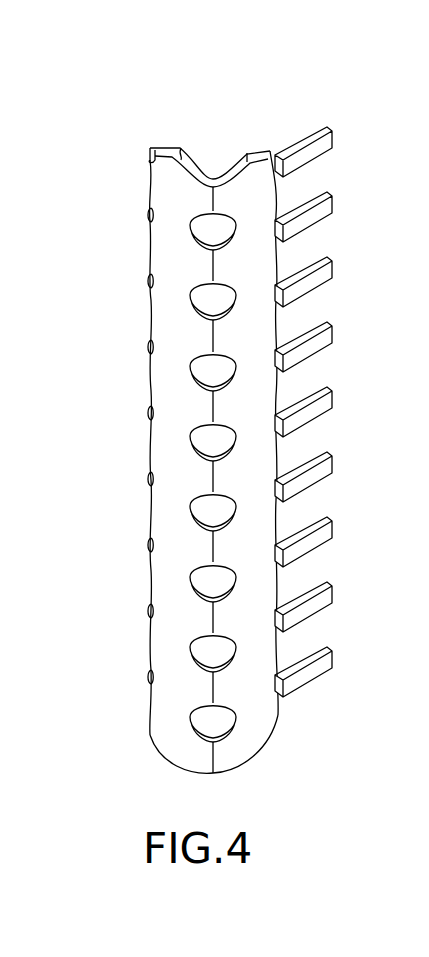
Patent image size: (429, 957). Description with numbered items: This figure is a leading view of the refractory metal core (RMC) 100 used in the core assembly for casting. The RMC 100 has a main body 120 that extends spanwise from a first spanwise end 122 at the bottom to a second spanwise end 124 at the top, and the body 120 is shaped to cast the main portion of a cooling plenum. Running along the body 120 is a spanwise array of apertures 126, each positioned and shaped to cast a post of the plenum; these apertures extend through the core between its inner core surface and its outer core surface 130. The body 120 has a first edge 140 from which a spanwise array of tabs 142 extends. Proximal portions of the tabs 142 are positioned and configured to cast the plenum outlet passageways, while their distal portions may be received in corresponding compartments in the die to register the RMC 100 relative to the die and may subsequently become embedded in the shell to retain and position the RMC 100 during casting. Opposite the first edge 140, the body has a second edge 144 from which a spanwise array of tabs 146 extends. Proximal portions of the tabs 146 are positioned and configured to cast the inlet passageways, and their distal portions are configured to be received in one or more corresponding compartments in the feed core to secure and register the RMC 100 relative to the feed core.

The refractory metal core 100 is at (227, 143).
The main body 120 is at (255, 721).
The first spanwise end 122 is at (237, 766).
The second spanwise end 124 is at (247, 158).
The apertures 126 is at (205, 727).
The outer core surface 130 is at (163, 645).
The first edge 140 is at (270, 462).
The tabs 142 is at (308, 672).
The second edge 144 is at (152, 458).
The tabs 146 is at (181, 146).